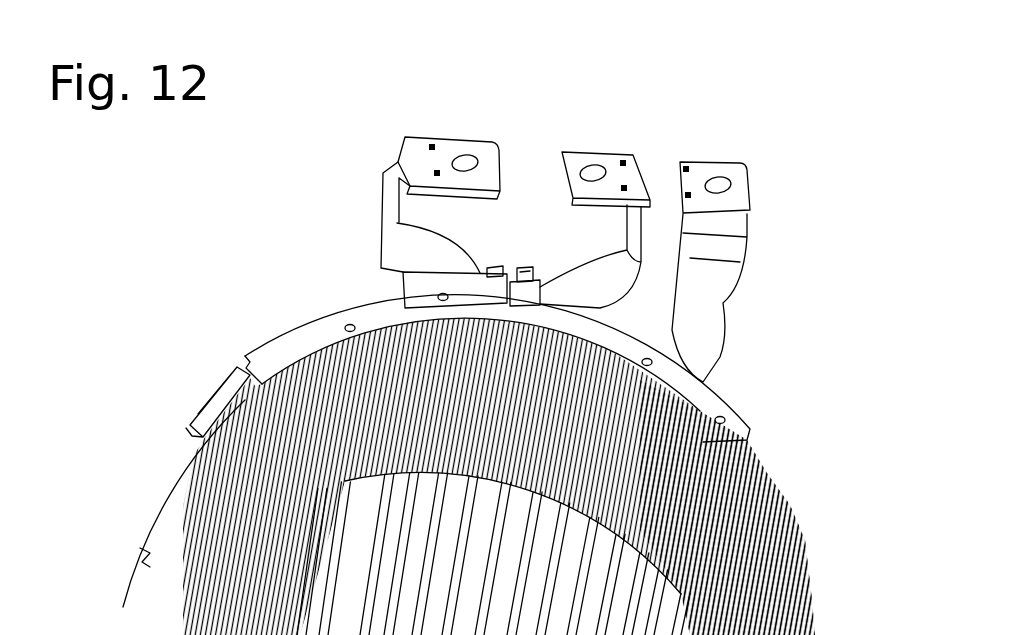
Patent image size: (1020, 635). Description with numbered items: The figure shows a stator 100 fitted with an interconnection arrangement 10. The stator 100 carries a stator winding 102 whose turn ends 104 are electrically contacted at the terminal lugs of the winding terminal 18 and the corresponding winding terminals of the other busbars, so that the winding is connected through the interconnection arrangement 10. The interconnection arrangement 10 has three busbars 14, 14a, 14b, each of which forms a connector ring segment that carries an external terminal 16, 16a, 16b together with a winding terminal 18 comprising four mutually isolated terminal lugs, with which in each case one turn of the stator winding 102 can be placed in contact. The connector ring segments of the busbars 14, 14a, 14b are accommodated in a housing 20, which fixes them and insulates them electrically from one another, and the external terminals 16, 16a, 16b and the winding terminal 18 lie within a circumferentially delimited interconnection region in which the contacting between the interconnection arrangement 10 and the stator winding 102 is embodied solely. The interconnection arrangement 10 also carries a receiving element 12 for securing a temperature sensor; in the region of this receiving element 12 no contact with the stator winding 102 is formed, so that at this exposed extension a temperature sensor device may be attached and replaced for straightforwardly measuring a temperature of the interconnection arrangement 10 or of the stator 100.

The interconnection arrangement 10 is at (752, 282).
The receiving element 12 is at (218, 412).
The busbar 14 is at (389, 173).
The busbar 14a is at (630, 235).
The busbar 14b is at (717, 268).
The external terminal 16 is at (448, 148).
The external terminal 16a is at (617, 163).
The external terminal 16b is at (697, 173).
The winding terminal 18 is at (395, 330).
The housing 20 is at (318, 345).
The stator 100 is at (203, 280).
The stator winding 102 is at (780, 460).
The turn ends 104 is at (345, 305).